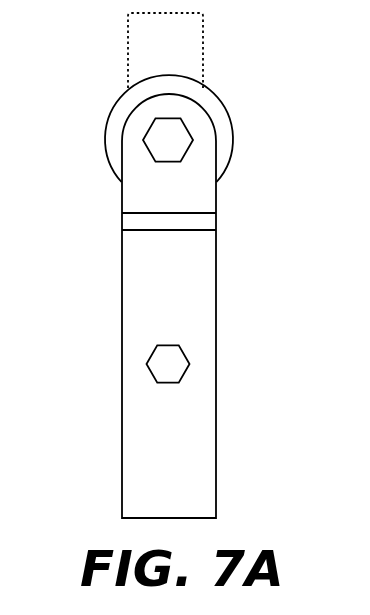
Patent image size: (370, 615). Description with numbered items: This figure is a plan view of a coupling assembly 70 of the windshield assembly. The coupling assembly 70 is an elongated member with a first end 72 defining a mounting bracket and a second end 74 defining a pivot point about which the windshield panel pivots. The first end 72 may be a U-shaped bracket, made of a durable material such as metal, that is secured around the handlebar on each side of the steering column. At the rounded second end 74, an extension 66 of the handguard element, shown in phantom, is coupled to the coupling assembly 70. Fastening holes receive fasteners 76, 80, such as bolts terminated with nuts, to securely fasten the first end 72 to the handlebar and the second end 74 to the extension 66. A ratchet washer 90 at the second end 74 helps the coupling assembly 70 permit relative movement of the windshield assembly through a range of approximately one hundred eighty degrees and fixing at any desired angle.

The coupling assembly 70 is at (276, 301).
The first end 72 is at (55, 348).
The second end 74 is at (80, 72).
The fastener 76 is at (193, 139).
The fastener 80 is at (157, 345).
The ratchet washer 90 is at (213, 95).
The extension 66 is at (128, 57).